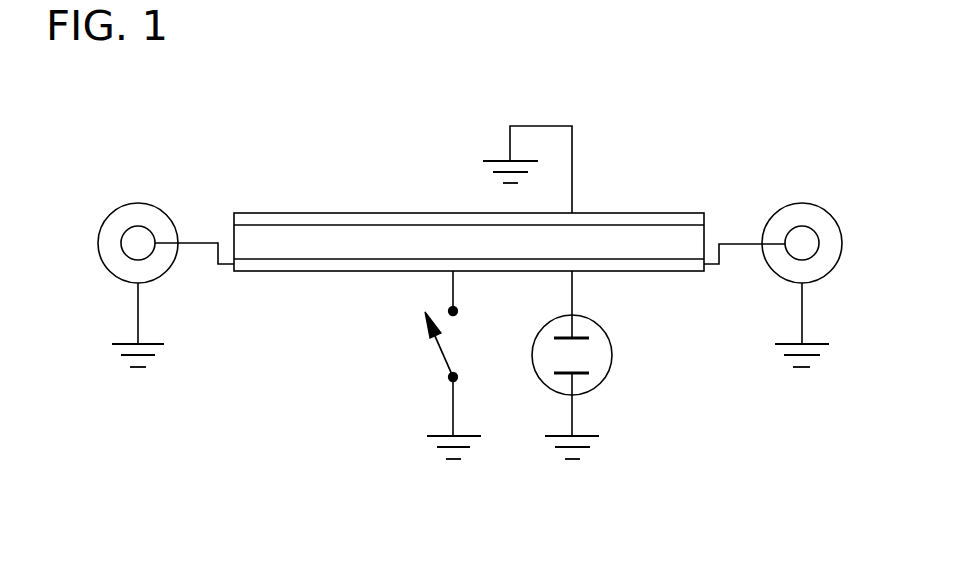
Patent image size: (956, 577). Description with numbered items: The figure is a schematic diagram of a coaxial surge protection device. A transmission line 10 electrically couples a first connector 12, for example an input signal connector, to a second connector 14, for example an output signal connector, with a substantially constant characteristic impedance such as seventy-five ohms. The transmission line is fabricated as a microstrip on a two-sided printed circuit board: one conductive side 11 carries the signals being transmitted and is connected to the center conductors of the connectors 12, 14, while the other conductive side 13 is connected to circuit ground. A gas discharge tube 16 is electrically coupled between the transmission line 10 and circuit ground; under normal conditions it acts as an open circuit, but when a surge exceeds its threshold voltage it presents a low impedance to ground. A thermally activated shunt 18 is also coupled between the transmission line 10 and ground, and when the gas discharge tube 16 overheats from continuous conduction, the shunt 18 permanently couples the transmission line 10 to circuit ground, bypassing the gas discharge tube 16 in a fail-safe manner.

The transmission line 10 is at (345, 104).
The conductive side of the printed circuit board 11 is at (262, 271).
The first connector 12 is at (138, 203).
The other conductive side of the printed circuit board 13 is at (613, 213).
The second connector 14 is at (802, 203).
The gas discharge tube 16 is at (607, 333).
The thermally activated shunt 18 is at (441, 358).